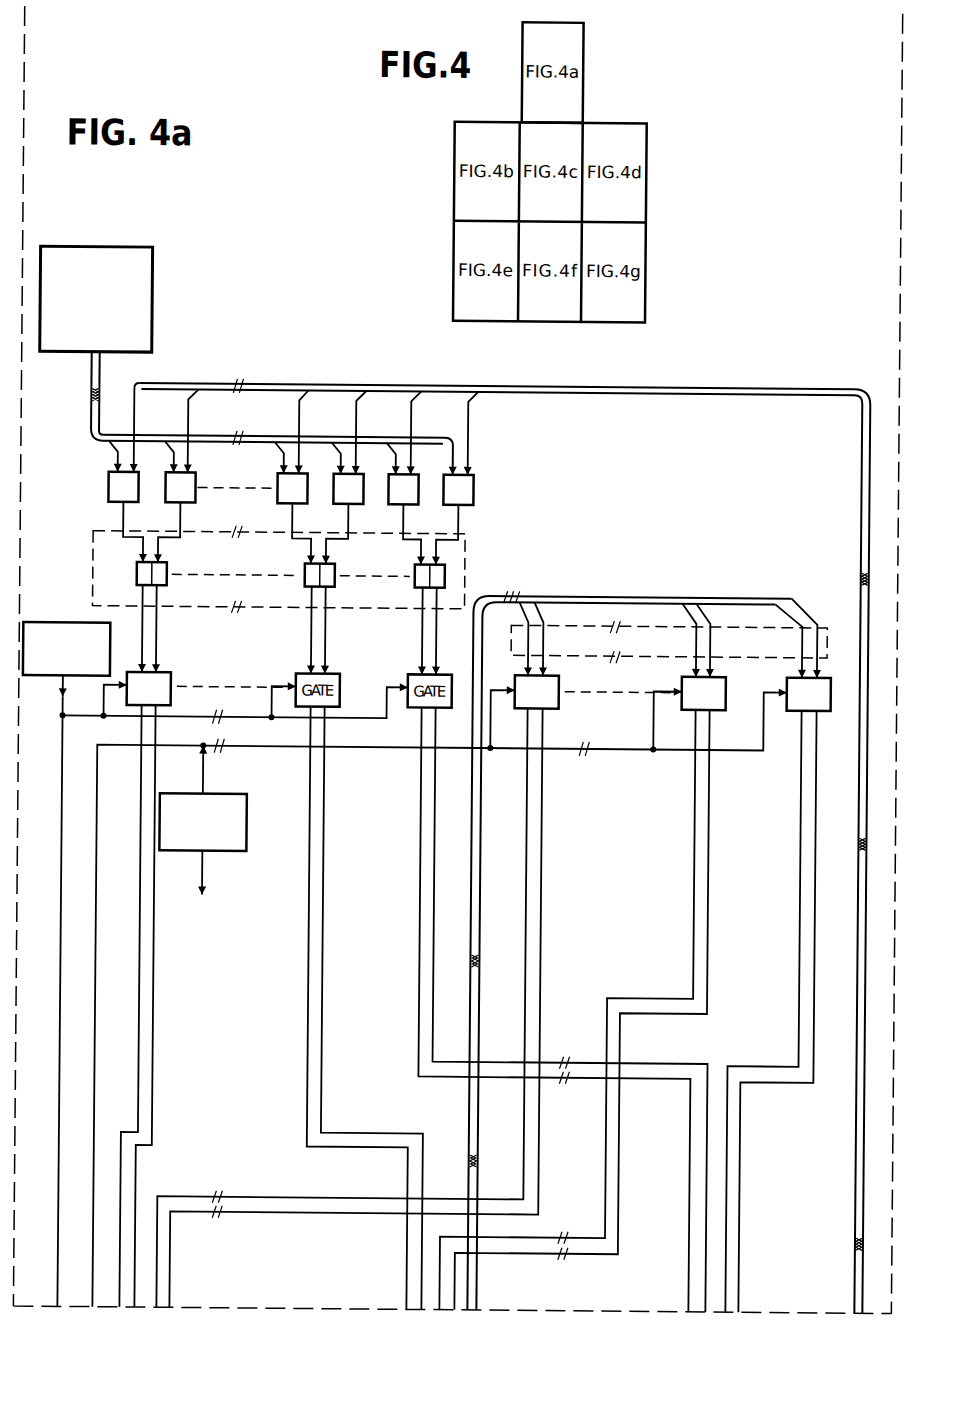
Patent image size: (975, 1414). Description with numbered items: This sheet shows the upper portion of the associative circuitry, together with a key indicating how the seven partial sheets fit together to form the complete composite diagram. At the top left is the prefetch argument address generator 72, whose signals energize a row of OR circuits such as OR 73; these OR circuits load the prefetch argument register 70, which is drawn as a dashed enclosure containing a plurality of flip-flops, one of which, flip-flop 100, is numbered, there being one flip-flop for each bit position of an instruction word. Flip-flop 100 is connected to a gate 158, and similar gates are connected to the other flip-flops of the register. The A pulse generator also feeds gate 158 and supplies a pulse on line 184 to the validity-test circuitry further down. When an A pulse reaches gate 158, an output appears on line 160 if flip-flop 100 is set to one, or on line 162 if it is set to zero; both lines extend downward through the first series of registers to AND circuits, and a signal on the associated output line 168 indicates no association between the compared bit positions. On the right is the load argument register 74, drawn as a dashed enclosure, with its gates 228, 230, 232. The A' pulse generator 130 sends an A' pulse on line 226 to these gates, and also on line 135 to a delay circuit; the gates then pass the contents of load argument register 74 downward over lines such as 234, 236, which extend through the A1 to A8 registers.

The prefetch argument address generator 72 is at (113, 250).
The OR circuit 73 is at (108, 491).
The prefetch argument register 70 is at (93, 556).
The flip-flop 100 is at (137, 578).
The line 168 is at (70, 626).
The gate 158 is at (173, 676).
The A' pulse generator 130 is at (232, 796).
The line 135 is at (207, 870).
The line 184 is at (63, 875).
The line 160 is at (142, 876).
The line 226 is at (99, 903).
The line 162 is at (157, 903).
The line 234 is at (528, 847).
The line 236 is at (545, 870).
The gate 228 is at (560, 689).
The gate 230 is at (727, 690).
The gate 232 is at (832, 706).
The load argument register 74 is at (830, 633).